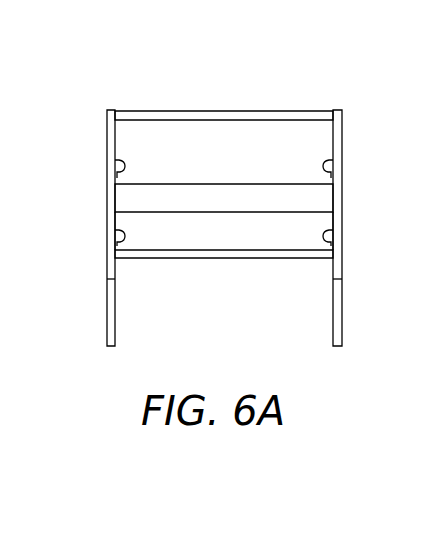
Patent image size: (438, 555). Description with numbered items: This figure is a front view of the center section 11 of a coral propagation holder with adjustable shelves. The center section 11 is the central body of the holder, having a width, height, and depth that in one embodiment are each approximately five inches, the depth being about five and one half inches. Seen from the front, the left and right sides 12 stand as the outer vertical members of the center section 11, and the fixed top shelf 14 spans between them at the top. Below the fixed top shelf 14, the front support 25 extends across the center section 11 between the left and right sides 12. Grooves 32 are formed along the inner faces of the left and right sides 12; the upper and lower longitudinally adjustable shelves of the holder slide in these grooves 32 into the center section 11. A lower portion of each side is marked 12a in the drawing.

The center section 11 is at (234, 78).
The left and right sides 12 is at (108, 268).
The post section 12a is at (118, 218).
The fixed top shelf 14 is at (207, 120).
The front support 25 is at (195, 204).
The grooves 32 is at (119, 165).